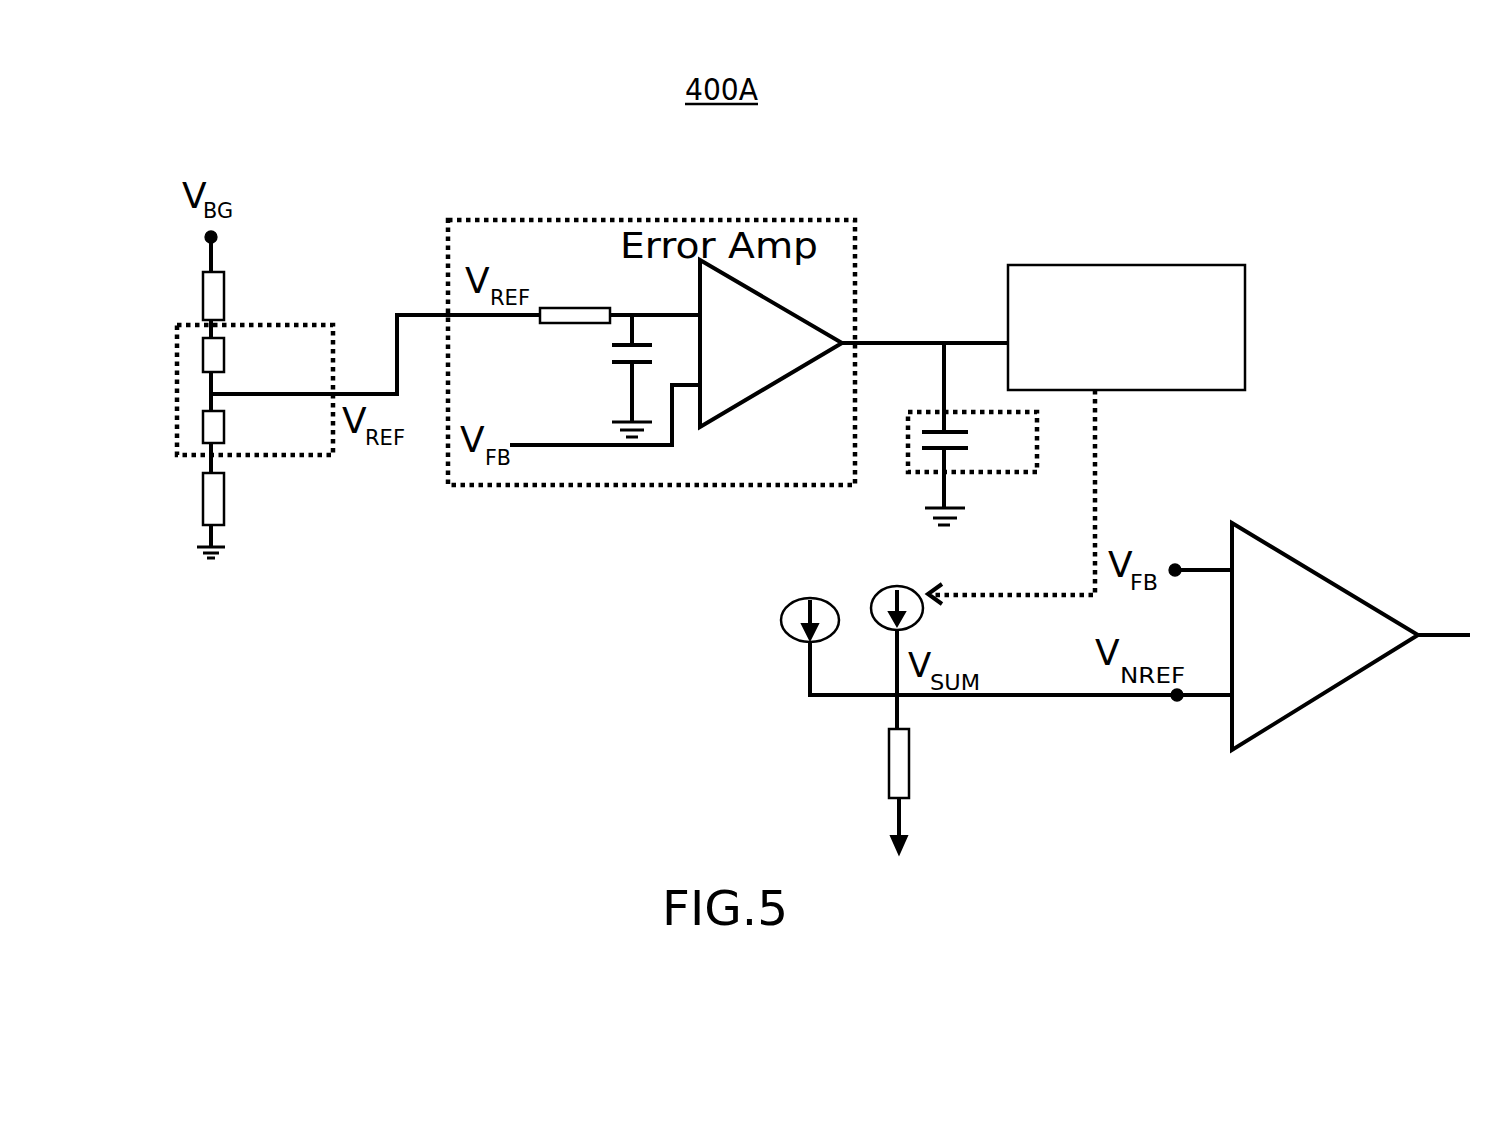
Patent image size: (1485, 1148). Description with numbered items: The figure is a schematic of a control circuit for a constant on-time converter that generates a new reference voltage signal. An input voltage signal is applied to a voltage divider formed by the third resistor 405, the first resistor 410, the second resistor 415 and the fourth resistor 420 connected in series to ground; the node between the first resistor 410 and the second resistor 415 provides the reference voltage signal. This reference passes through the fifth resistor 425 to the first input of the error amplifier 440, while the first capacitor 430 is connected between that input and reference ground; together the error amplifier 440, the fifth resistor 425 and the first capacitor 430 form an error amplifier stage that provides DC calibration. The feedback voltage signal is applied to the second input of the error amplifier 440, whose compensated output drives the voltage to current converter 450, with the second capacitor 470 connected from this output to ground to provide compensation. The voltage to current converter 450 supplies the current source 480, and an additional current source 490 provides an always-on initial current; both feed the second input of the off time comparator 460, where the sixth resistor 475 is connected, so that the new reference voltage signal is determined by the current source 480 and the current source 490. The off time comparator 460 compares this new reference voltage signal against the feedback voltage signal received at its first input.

The third resistor 405 is at (203, 293).
The first resistor 410 is at (203, 353).
The second resistor 415 is at (203, 426).
The fourth resistor 420 is at (203, 497).
The fifth resistor 425 is at (556, 308).
The first capacitor 430 is at (628, 365).
The error amplifier 440 is at (793, 312).
The voltage to current converter 450 is at (1118, 265).
The off time comparator 460 is at (1322, 577).
The second capacitor 470 is at (957, 450).
The sixth resistor 475 is at (910, 750).
The current source 480 is at (875, 592).
The additional current source 490 is at (798, 600).